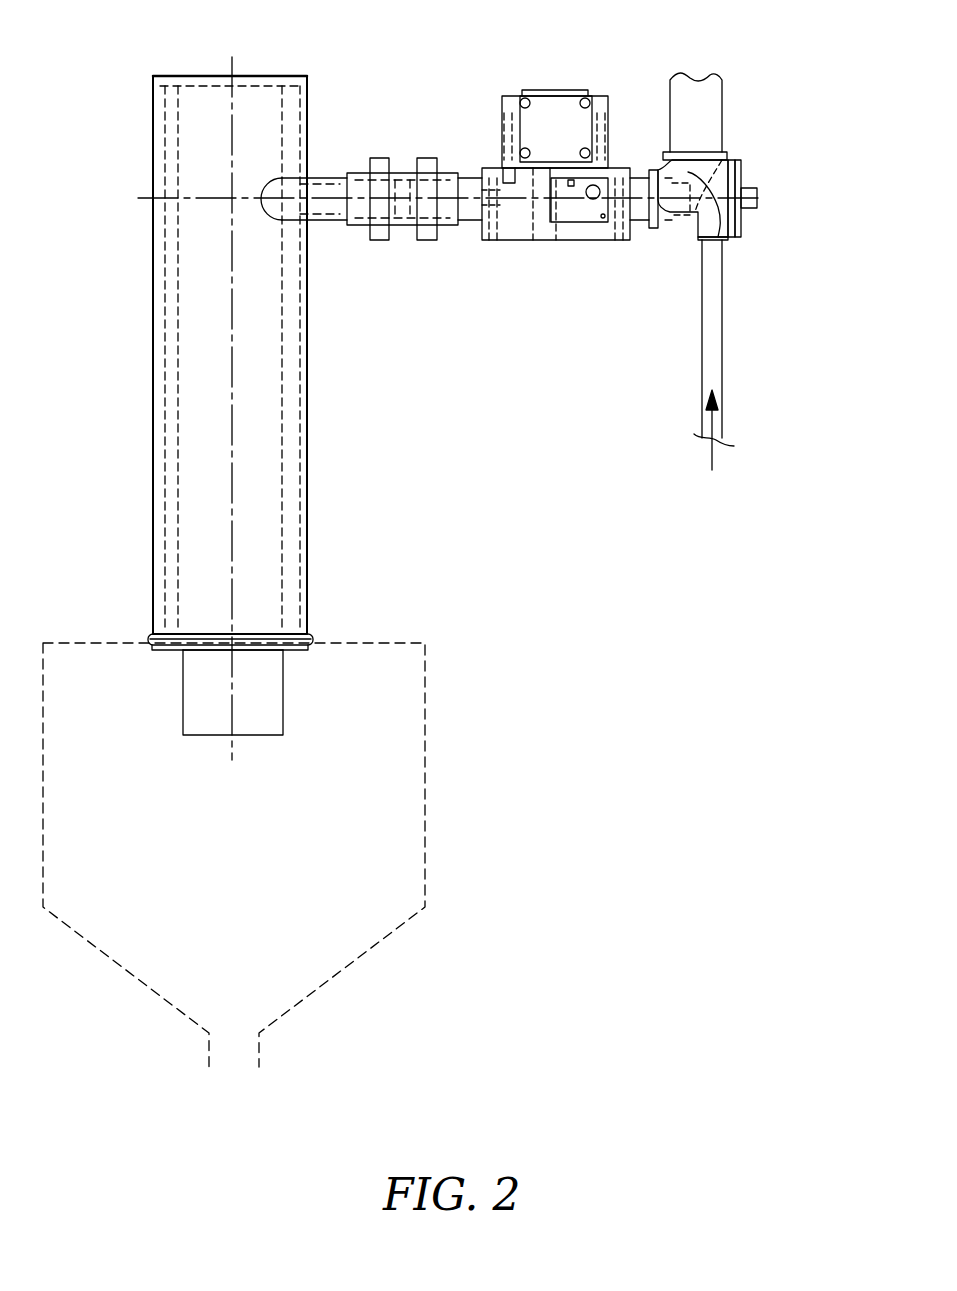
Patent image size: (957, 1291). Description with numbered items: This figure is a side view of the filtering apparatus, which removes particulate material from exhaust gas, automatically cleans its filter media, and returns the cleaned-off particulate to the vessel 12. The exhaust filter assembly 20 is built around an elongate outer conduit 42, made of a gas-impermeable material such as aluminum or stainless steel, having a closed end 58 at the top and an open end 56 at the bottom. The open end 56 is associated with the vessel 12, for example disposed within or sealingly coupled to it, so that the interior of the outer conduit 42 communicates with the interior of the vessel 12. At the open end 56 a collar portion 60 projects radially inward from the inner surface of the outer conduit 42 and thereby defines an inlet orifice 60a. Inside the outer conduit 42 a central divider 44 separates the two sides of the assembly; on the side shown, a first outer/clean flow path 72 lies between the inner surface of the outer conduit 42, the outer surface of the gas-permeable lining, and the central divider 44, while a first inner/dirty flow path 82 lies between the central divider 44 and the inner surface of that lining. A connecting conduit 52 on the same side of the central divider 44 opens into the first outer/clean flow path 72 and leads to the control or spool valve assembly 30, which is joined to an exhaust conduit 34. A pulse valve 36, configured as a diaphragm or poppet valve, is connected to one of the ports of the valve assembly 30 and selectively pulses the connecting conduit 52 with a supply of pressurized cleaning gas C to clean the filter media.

The vessel 12 is at (425, 785).
The exhaust filter assembly 20 is at (135, 240).
The spool valve assembly 30 is at (547, 230).
The exhaust conduit 34 is at (708, 118).
The pulse valve 36 is at (745, 215).
The outer conduit 42 is at (152, 551).
The central divider 44 is at (204, 725).
The connecting conduit 52 is at (327, 205).
The open end 56 is at (152, 650).
The closed end 58 is at (197, 76).
The collar portion 60 is at (302, 650).
The inlet orifice 60a is at (196, 650).
The first outer/clean flow path 72 is at (290, 340).
The first inner/dirty flow path 82 is at (257, 425).
The cleaning gas C is at (712, 460).